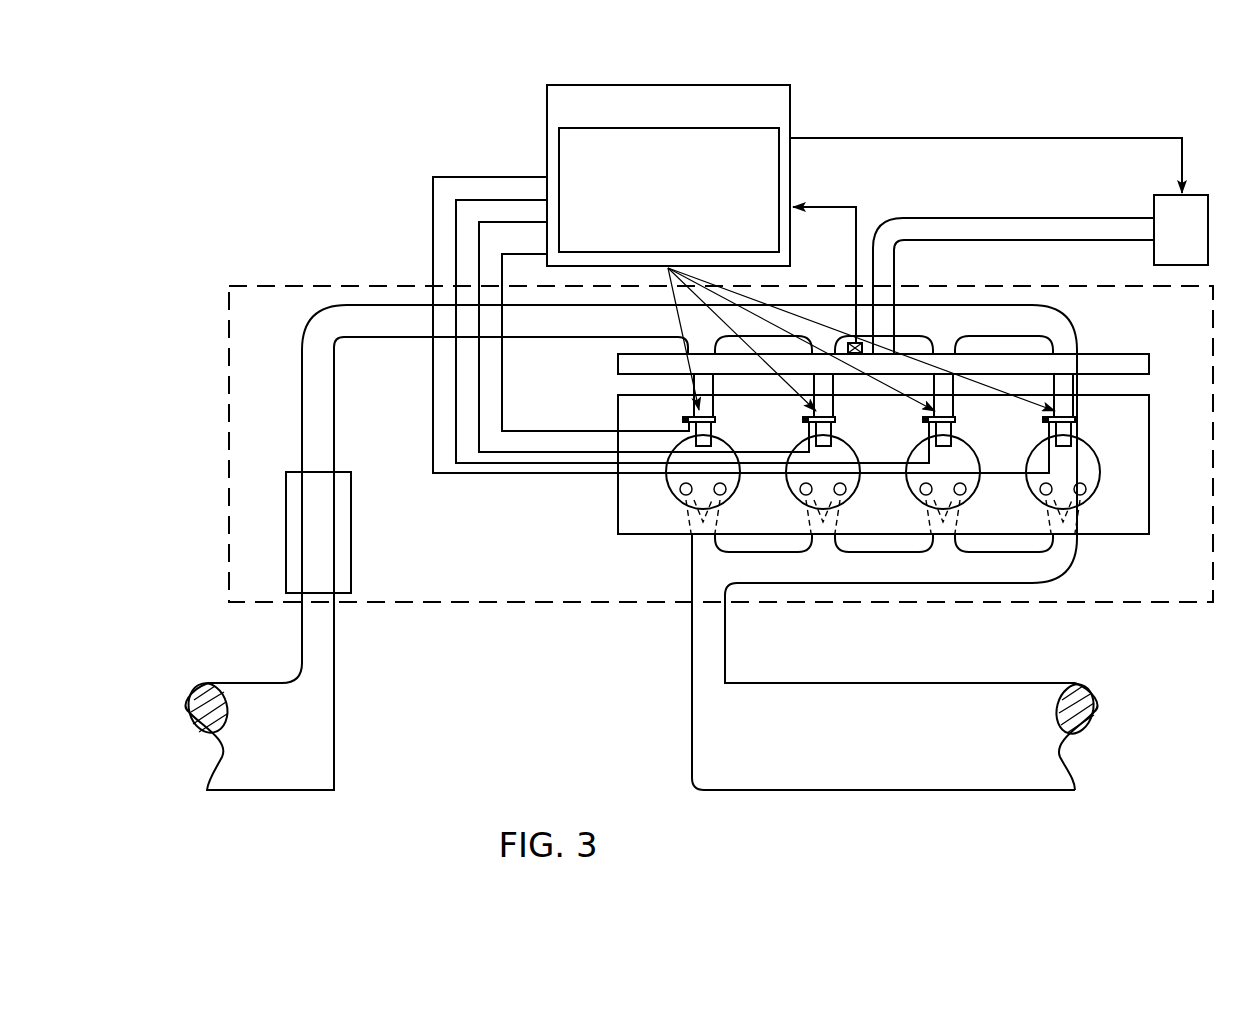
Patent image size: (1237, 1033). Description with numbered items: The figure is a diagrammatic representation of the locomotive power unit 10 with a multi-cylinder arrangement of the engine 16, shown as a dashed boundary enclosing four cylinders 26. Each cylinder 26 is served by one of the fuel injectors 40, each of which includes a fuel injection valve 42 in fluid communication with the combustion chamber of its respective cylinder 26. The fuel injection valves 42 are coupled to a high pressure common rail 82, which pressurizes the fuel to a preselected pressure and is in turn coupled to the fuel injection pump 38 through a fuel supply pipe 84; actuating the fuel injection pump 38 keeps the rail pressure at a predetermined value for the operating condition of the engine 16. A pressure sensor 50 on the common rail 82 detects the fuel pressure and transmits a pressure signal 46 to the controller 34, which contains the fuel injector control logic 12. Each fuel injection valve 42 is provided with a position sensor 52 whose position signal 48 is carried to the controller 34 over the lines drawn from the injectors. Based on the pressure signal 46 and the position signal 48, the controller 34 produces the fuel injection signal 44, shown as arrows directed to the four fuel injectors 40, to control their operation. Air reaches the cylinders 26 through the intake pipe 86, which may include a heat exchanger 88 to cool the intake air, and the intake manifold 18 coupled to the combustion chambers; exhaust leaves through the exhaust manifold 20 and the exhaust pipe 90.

The locomotive power unit 10 is at (206, 100).
The fuel injector control logic 12 is at (547, 134).
The engine 16 is at (1094, 603).
The intake manifold 18 is at (815, 312).
The exhaust manifold 20 is at (718, 628).
The cylinder 26 is at (790, 478).
The controller 34 is at (792, 108).
The fuel injection pump 38 is at (999, 201).
The fuel injector 40 is at (681, 419).
The fuel injection valve 42 is at (810, 422).
The fuel injection signal 44 is at (720, 320).
The pressure signal 46 is at (830, 206).
The position signal 48 is at (533, 431).
The pressure sensor 50 is at (870, 345).
The position sensor 52 is at (927, 420).
The high pressure common rail 82 is at (1150, 363).
The fuel supply pipe 84 is at (1000, 218).
The intake pipe 86 is at (327, 415).
The heat exchanger 88 is at (352, 538).
The exhaust pipe 90 is at (913, 688).